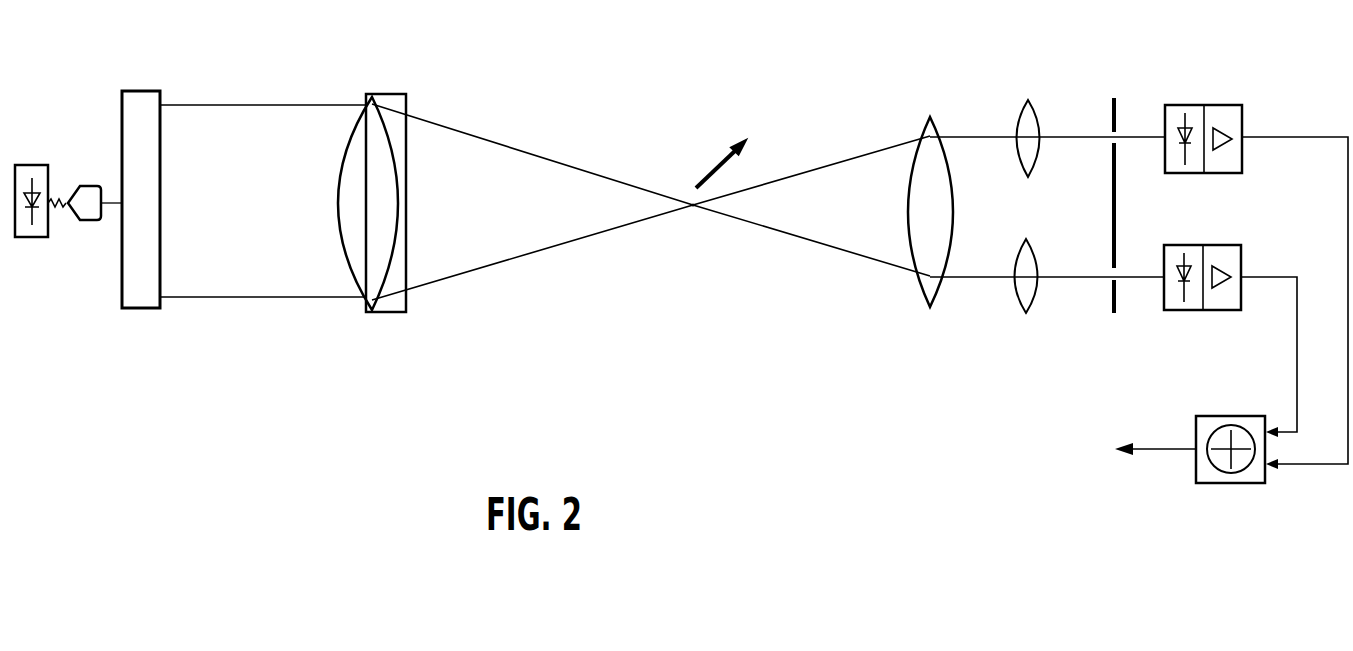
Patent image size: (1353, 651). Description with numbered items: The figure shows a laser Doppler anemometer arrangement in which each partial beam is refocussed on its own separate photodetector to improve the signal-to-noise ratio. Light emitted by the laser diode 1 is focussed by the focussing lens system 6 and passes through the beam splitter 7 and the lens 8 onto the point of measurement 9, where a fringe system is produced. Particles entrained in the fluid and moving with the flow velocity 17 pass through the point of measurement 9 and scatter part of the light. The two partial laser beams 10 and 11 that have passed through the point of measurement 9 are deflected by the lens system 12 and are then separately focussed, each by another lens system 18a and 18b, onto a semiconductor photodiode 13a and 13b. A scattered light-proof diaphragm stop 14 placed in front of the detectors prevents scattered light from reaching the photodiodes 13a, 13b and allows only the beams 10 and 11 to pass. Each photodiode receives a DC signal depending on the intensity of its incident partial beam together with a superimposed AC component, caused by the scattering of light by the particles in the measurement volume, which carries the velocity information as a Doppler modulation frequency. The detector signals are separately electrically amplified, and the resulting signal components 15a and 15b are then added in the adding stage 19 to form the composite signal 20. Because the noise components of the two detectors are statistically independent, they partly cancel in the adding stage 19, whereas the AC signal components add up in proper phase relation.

The laser diode 1 is at (32, 163).
The focussing lens system 6 is at (83, 184).
The beam splitter 7 is at (143, 91).
The lens 8 is at (385, 94).
The point of measurement 9 is at (693, 208).
The partial laser beam 10 is at (551, 160).
The partial laser beam 11 is at (556, 246).
The lens system 12 is at (931, 115).
The semiconductor photodiode 13a is at (1183, 104).
The semiconductor photodiode 13b is at (1176, 311).
The scattered light-proof diaphragm stop 14 is at (1113, 96).
The AC signal component 15a is at (1280, 135).
The AC signal component 15b is at (1262, 275).
The flow velocity 17 is at (731, 145).
The lens system 18a is at (1027, 98).
The lens system 18b is at (1027, 313).
The adding stage 19 is at (1215, 484).
The composite signal 20 is at (1138, 451).